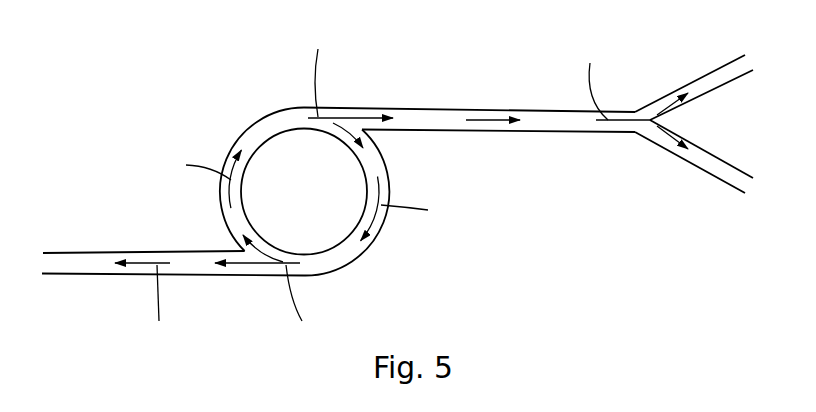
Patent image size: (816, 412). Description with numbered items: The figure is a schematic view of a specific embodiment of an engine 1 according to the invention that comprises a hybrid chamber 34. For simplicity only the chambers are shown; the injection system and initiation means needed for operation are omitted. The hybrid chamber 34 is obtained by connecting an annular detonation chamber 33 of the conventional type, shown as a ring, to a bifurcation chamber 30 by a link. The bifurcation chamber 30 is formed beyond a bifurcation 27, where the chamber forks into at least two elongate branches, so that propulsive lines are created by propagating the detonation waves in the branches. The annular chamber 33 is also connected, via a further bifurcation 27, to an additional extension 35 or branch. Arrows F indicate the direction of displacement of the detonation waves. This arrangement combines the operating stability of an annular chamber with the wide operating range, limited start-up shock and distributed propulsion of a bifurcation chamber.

The engine 1 is at (196, 100).
The bifurcation 27 is at (633, 108).
The bifurcation chamber 30 is at (620, 150).
The annular detonation chamber 33 is at (381, 254).
The hybrid chamber 34 is at (354, 90).
The additional extension 35 is at (135, 289).